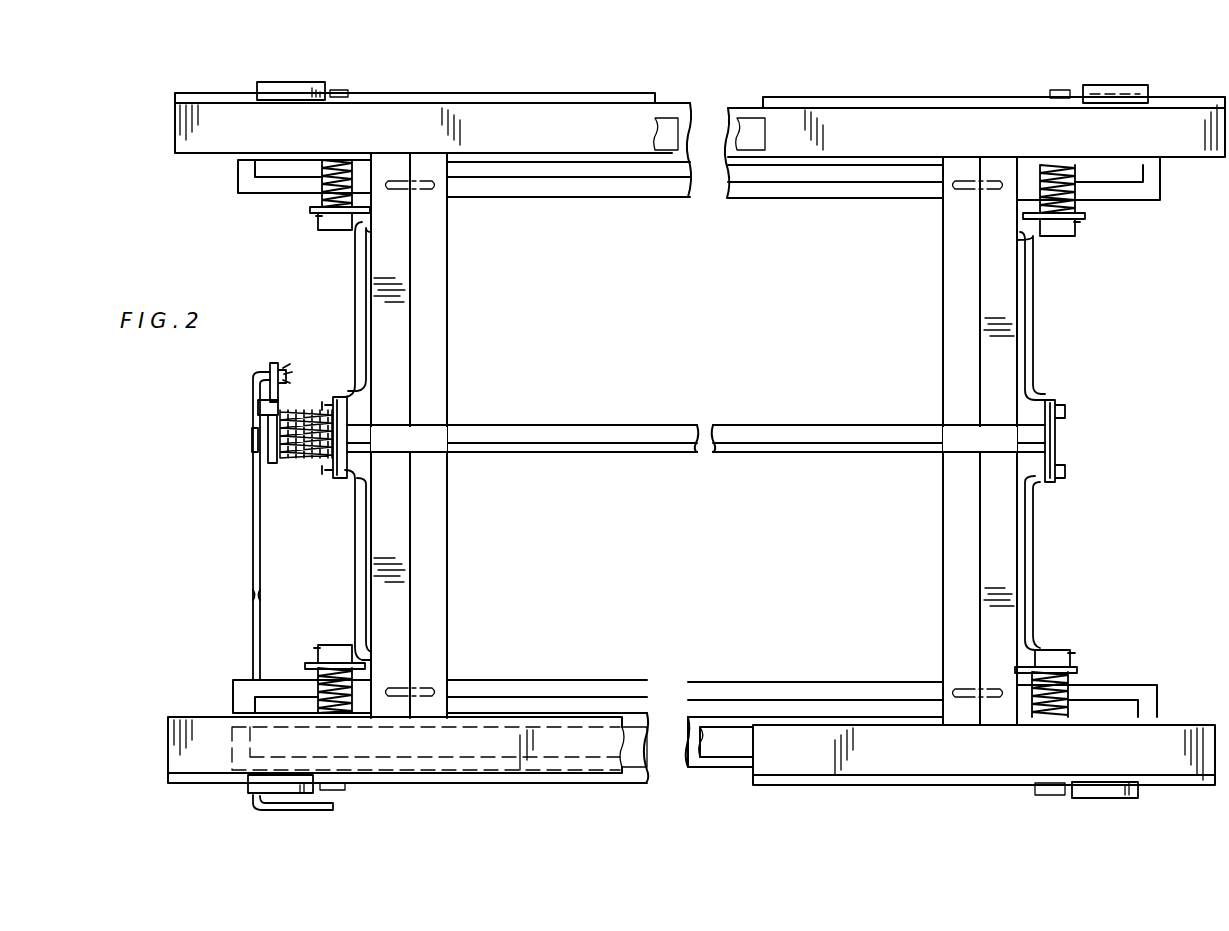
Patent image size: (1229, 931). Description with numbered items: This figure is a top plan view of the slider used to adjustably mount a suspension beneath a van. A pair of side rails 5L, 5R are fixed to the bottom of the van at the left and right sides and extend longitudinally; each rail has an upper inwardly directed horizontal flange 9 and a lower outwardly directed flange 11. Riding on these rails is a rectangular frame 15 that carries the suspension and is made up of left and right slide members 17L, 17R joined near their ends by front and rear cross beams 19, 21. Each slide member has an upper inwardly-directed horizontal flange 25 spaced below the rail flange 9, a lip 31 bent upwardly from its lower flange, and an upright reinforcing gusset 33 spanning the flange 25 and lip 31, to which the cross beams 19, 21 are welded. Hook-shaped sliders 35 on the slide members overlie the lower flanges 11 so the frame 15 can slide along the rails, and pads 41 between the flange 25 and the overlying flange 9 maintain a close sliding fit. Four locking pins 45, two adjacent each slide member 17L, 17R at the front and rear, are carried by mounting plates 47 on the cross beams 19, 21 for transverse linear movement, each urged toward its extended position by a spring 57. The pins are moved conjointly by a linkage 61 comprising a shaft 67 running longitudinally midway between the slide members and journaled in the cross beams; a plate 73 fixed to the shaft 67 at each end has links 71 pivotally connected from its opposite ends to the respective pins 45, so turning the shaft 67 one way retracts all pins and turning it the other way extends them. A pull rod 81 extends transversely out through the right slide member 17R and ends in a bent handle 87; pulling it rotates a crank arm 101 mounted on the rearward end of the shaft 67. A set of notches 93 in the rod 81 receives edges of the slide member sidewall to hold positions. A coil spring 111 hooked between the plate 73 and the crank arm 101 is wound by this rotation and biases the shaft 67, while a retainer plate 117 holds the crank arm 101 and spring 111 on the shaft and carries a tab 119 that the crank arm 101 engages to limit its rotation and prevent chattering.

The left side rail 5L is at (680, 108).
The right side rail 5R is at (646, 782).
The upper inwardly directed horizontal flange 9 is at (652, 118).
The lower outwardly directed flange 11 is at (585, 100).
The rectangular frame 15 is at (455, 205).
The left slide member 17L is at (687, 198).
The right slide member 17R is at (640, 684).
The front cross beam 19 is at (945, 321).
The rear cross beam 21 is at (450, 345).
The upper inwardly-directed horizontal flange 25 is at (752, 160).
The lip 31 is at (848, 190).
The upright reinforcing gusset 33 is at (740, 175).
The hook-shaped sliders 35 is at (326, 86).
The pads 41 is at (748, 130).
The locking pins 45 is at (328, 190).
The mounting plates 47 is at (312, 218).
The spring 57 is at (335, 172).
The linkage 61 is at (260, 506).
The shaft 67 is at (605, 455).
The links 71 is at (355, 265).
The plate 73 is at (340, 478).
The pull rod 81 is at (252, 555).
The handle 87 is at (336, 806).
The notches 93 is at (252, 597).
The crank arm 101 is at (272, 383).
The coil spring 111 is at (320, 468).
The retainer plate 117 is at (265, 453).
The tab 119 is at (262, 407).